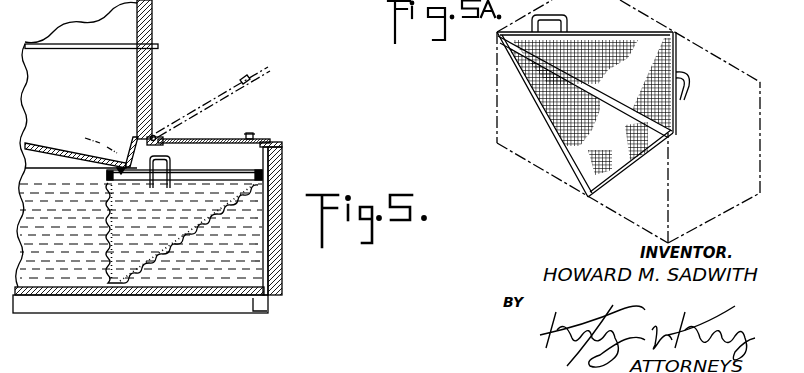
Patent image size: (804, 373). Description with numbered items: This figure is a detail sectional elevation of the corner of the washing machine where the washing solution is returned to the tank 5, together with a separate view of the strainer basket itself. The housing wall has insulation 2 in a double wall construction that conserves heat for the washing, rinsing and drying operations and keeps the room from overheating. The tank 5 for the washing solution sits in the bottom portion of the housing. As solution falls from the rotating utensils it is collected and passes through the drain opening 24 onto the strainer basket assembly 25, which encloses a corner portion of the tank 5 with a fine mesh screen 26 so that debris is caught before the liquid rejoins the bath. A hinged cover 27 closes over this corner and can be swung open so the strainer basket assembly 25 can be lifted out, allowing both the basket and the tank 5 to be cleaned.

In FIG. 5, the insulation 2 is at (152, 78).
In FIG. 5, the tank 5 is at (192, 295).
In FIG. 5, the drain opening 24 is at (120, 165).
In FIG. 5, the strainer basket assembly 25 is at (205, 234).
In FIG. 5A, the strainer basket assembly 25 is at (565, 166).
In FIG. 5, the fine mesh screen 26 is at (102, 227).
In FIG. 5A, the fine mesh screen 26 is at (550, 97).
In FIG. 5, the hinged cover 27 is at (220, 95).